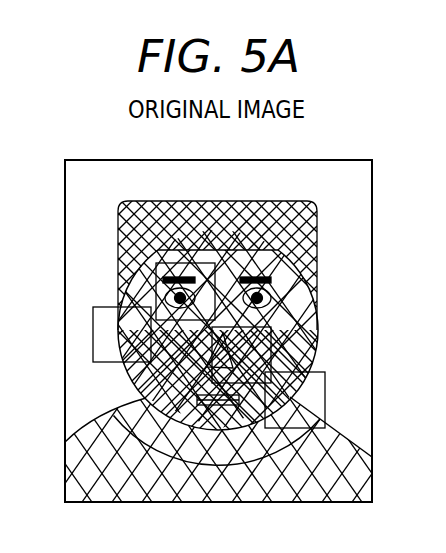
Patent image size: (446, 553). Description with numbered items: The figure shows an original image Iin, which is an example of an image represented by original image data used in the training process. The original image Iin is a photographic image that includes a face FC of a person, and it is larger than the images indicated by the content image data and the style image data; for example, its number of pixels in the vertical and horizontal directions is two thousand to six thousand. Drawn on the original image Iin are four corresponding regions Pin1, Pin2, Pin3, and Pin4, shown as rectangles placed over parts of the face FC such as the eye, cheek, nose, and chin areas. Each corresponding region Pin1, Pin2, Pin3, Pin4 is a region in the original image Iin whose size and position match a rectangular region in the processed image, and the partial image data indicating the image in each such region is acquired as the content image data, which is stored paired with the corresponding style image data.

The original image Iin is at (315, 160).
The corresponding region Pin1 is at (155, 283).
The corresponding region Pin2 is at (93, 333).
The corresponding region Pin3 is at (271, 352).
The corresponding region Pin4 is at (325, 397).
The face FC is at (118, 377).